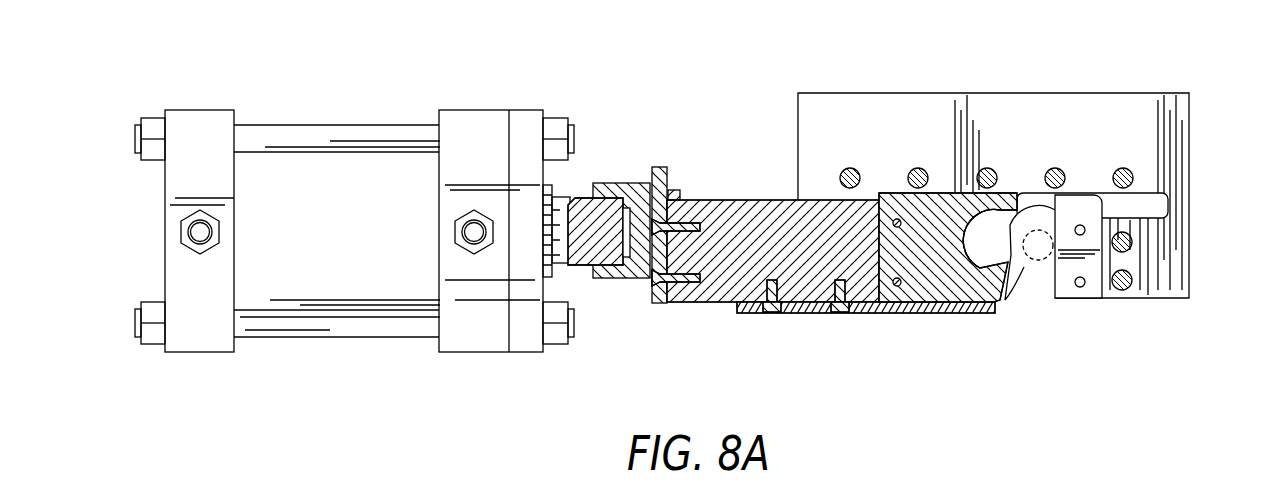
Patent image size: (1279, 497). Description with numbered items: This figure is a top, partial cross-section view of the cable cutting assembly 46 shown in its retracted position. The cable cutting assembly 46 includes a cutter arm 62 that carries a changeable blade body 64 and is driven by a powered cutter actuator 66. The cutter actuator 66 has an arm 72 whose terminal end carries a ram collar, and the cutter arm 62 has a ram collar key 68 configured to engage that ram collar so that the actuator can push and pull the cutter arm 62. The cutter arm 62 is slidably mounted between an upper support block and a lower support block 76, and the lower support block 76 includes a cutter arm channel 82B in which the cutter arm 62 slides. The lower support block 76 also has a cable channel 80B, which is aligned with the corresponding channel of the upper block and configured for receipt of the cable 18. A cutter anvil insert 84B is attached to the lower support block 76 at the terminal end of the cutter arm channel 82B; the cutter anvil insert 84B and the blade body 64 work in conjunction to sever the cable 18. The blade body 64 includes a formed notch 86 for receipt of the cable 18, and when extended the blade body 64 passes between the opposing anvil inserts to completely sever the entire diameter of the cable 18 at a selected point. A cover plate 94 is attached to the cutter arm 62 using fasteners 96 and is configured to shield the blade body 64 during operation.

The cutter actuator 66 is at (313, 221).
The arm 72 is at (575, 197).
The ram collar key 68 is at (660, 167).
The cutter arm 62 is at (733, 218).
The blade body 64 is at (903, 205).
The cutter arm channel 82B is at (1000, 240).
The cable 18 is at (1043, 243).
The lower support block 76 is at (1182, 146).
The fasteners 96 is at (772, 313).
The cover plate 94 is at (917, 313).
The formed notch 86 is at (1024, 267).
The cable channel 80B is at (1035, 278).
The cutter anvil insert 84B is at (1090, 292).
The cable cutting assembly 46 is at (1148, 403).